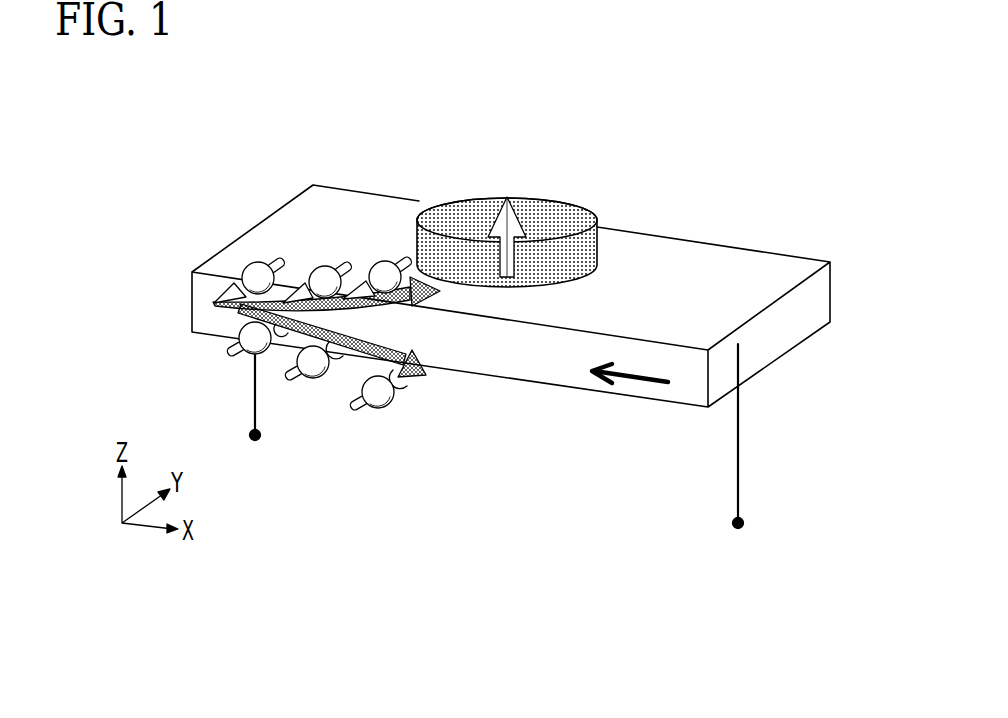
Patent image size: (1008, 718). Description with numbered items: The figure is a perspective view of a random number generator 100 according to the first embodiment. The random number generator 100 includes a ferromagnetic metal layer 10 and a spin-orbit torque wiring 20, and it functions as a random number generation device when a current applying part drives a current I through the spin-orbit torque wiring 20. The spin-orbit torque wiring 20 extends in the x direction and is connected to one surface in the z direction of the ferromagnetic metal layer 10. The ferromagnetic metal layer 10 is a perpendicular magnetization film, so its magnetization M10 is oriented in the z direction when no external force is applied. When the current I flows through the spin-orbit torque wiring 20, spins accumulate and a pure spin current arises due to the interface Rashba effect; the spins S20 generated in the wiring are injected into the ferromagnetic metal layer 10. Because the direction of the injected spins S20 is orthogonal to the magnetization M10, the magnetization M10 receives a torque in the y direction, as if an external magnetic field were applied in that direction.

The random number generator 100 is at (511, 294).
The ferromagnetic metal layer 10 is at (557, 203).
The spin-orbit torque wiring 20 is at (710, 322).
The magnetization M10 is at (513, 214).
The spins S20 is at (249, 263).
The current I is at (623, 378).